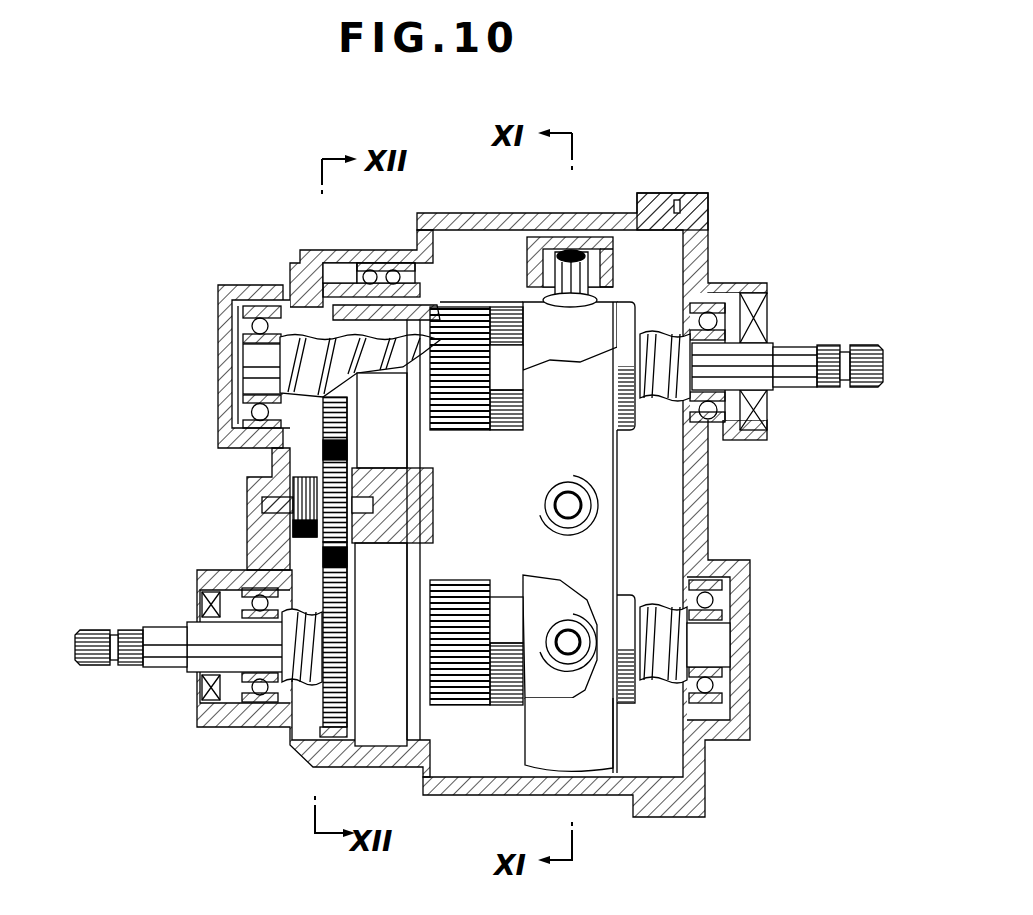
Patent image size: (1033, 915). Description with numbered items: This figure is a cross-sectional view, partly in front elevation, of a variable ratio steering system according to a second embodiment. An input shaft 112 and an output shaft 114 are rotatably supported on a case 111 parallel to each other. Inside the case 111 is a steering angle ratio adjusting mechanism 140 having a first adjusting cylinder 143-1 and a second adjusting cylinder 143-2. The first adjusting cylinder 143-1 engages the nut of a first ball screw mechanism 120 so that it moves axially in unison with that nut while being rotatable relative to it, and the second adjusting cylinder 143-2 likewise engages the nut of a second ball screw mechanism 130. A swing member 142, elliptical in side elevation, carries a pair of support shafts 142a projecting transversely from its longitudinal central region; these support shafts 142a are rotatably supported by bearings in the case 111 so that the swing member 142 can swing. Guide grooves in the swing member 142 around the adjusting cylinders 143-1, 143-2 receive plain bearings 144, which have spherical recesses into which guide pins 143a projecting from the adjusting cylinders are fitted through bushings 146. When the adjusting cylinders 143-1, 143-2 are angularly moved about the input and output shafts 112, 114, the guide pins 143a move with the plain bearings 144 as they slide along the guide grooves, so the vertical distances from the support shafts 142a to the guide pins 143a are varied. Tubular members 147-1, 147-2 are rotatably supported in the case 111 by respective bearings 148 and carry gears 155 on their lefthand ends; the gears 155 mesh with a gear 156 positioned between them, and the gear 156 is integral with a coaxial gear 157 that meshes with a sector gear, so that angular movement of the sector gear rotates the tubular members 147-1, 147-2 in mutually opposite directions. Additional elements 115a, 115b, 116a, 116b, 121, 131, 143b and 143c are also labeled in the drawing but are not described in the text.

The case 111 is at (653, 197).
The input shaft 112 is at (797, 352).
The output shaft 114 is at (95, 668).
The bearing 115a is at (256, 318).
The bearing 115b is at (730, 320).
The bearing 116a is at (242, 727).
The bearing 116b is at (728, 715).
The first ball screw mechanism 120 is at (665, 250).
The worm 121 is at (660, 348).
The second ball screw mechanism 130 is at (664, 708).
The bearing housing 131 is at (700, 590).
The steering angle ratio adjusting mechanism 140 is at (645, 516).
The swing member 142 is at (597, 228).
The support shafts 142a is at (572, 512).
The first adjusting cylinder 143-1 is at (510, 313).
The second adjusting cylinder 143-2 is at (508, 606).
The guide pins 143a is at (540, 235).
The toothed portion 143b is at (463, 322).
The engaging portion 143c is at (520, 433).
The plain bearings 144 is at (612, 275).
The bushings 146 is at (565, 237).
The tubular member 147-1 is at (418, 430).
The tubular member 147-2 is at (420, 705).
The bearings 148 is at (392, 262).
The gears 155 is at (344, 278).
The gear 156 is at (318, 478).
The coaxial gear 157 is at (307, 546).